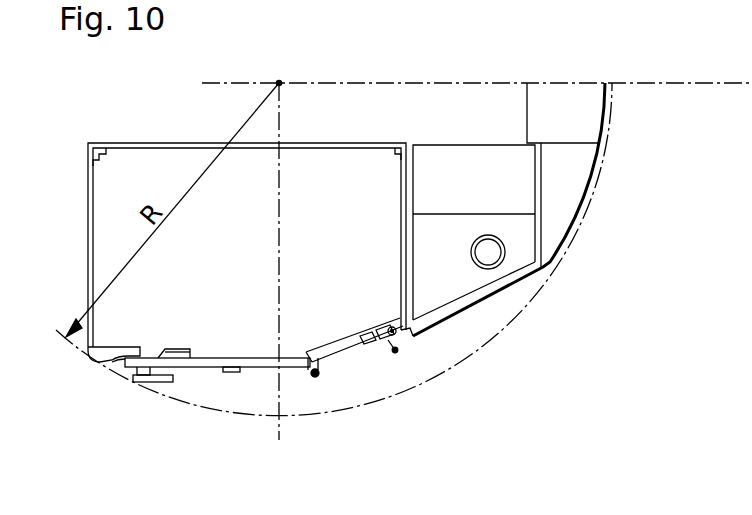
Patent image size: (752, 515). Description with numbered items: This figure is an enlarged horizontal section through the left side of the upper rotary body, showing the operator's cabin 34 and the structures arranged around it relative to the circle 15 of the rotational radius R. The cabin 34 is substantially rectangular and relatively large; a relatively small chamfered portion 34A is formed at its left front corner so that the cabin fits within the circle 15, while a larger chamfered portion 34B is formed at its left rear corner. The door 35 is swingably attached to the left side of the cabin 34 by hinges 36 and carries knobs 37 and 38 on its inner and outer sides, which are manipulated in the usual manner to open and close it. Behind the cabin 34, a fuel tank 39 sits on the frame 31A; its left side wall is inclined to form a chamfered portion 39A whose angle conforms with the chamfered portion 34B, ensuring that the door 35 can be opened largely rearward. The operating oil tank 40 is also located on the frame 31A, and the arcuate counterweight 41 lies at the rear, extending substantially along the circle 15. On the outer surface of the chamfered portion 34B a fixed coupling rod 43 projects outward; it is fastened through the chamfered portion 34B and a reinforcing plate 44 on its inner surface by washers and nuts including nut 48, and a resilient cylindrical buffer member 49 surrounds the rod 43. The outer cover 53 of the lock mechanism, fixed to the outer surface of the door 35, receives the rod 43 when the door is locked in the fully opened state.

The circle of the rotational radius 15 is at (302, 418).
The operator's cabin 34 is at (88, 190).
The chamfered portion 34A is at (102, 362).
The chamfered portion 34B is at (378, 345).
The door 35 is at (262, 367).
The hinges 36 is at (320, 376).
The knob 37 is at (188, 370).
The knob 38 is at (155, 383).
The fuel tank 39 is at (487, 285).
The chamfered portion 39A is at (418, 328).
The operating oil tank 40 is at (520, 196).
The counterweight 41 is at (577, 164).
The fixed coupling rod 43 is at (383, 336).
The reinforcing plate 44 is at (372, 334).
The nut 48 is at (392, 328).
The buffer member 49 is at (398, 350).
The frame 31A is at (404, 339).
The outer cover 53 is at (230, 373).